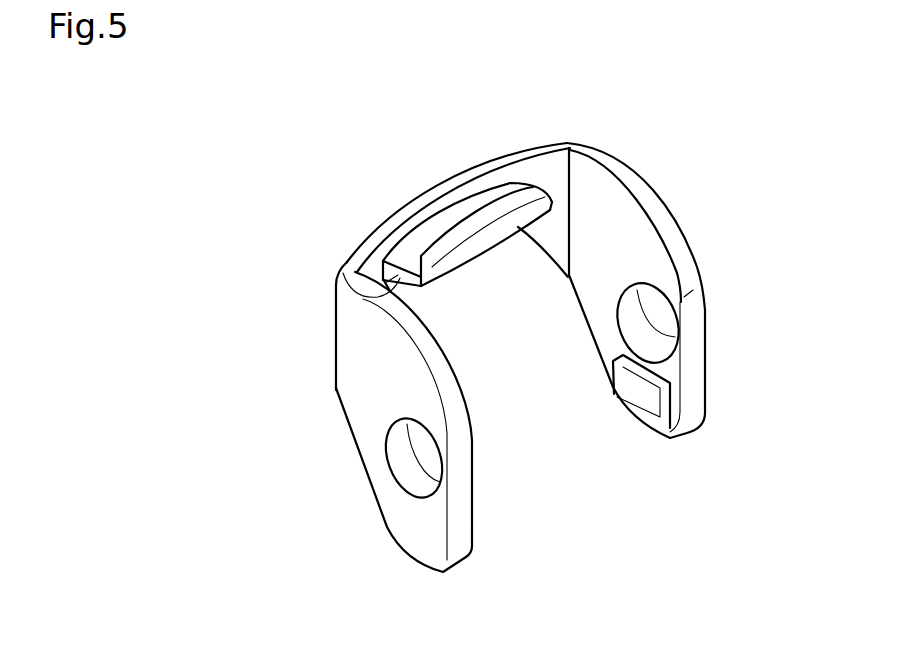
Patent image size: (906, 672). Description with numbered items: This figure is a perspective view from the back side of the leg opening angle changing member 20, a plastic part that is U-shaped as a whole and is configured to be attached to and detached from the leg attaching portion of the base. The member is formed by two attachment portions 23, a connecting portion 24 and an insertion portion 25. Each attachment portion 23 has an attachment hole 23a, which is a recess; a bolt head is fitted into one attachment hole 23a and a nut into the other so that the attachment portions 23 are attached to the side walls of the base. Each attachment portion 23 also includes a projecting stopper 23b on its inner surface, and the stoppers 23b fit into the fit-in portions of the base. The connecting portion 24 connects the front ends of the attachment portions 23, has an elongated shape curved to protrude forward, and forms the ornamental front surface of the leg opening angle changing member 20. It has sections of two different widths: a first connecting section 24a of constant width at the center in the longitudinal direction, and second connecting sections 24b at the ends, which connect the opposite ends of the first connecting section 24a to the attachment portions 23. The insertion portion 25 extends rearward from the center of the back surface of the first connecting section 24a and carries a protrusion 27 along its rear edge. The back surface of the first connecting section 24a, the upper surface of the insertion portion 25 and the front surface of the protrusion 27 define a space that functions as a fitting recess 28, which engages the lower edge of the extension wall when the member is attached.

The leg opening angle changing member 20 is at (632, 110).
The attachment portion 23 is at (352, 343).
The attachment hole 23a is at (412, 440).
The stopper 23b is at (660, 416).
The connecting portion 24 is at (430, 189).
The first connecting section 24a is at (458, 207).
The second connecting section 24b is at (538, 237).
The insertion portion 25 is at (377, 297).
The protrusion 27 is at (528, 188).
The fitting recess 28 is at (403, 250).